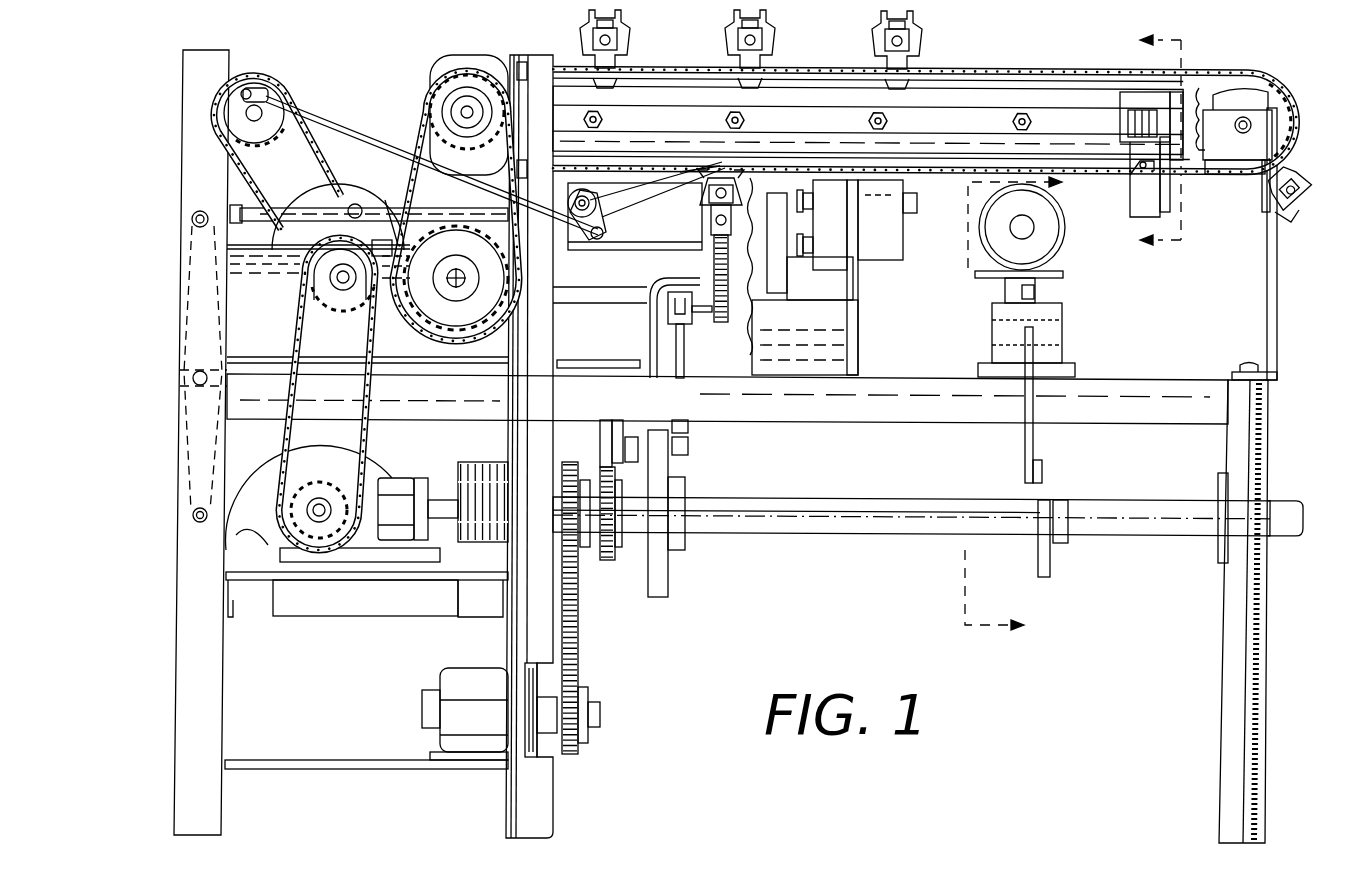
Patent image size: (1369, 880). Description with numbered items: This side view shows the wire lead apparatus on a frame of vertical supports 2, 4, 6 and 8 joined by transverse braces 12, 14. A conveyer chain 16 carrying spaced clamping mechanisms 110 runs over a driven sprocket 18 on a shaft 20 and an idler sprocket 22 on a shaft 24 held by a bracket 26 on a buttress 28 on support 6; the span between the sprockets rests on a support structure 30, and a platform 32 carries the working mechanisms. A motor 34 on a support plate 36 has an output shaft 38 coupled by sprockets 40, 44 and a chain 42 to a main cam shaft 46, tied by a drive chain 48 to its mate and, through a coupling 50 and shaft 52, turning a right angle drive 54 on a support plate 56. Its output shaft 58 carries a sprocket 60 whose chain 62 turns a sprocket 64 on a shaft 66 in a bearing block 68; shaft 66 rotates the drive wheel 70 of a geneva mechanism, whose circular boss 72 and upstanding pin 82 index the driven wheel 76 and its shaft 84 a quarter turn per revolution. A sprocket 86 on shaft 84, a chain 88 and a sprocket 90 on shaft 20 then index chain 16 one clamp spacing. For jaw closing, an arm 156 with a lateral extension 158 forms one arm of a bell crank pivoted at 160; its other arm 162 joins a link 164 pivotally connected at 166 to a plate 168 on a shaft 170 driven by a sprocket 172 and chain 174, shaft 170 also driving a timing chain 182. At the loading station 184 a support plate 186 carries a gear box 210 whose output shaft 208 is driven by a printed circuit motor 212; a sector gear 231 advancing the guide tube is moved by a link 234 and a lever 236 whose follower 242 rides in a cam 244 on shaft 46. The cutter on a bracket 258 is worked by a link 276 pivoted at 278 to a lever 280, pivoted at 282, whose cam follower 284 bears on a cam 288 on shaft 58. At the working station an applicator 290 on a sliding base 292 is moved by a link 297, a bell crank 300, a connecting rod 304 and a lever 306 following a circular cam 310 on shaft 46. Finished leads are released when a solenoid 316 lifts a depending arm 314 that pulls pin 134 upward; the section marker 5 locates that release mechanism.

The vertical support 2 is at (190, 720).
The vertical support 4 is at (522, 800).
The section line 5- 5 is at (1152, 140).
The vertical support 6 is at (1258, 765).
The vertical support 8 is at (1023, 404).
The transverse brace 12 is at (253, 606).
The transverse brace 14 is at (478, 600).
The conveyer chain 16 is at (1018, 66).
The driven sprocket 18 is at (490, 58).
The shaft 20 is at (465, 110).
The idler sprocket 22 is at (1266, 103).
The shaft 24 is at (1253, 125).
The bracket 26 is at (1262, 170).
The buttress 28 is at (1270, 328).
The support structure 30 is at (963, 131).
The platform 32 is at (935, 414).
The motor 34 is at (492, 696).
The support plate 36 is at (345, 766).
The output shaft 38 is at (600, 722).
The sprocket 40 is at (584, 740).
The chain 42 is at (578, 638).
The sprocket 44 is at (586, 480).
The shaft 46 is at (826, 522).
The drive chain 48 is at (610, 562).
The coupling 50 is at (484, 464).
The shaft 52 is at (440, 505).
The right angle drive mechanism 54 is at (388, 480).
The support plate 56 is at (395, 582).
The output shaft 58 is at (312, 525).
The sprocket 60 is at (335, 496).
The chain 62 is at (310, 352).
The sprocket 64 is at (356, 266).
The shaft 66 is at (312, 288).
The bearing block 68 is at (268, 280).
The drive wheel 70 is at (333, 227).
The circular boss 72 is at (359, 201).
The driven wheel 76 is at (400, 215).
The upstanding pin 82 is at (380, 248).
The shaft 84 is at (458, 278).
The sprocket 86 is at (468, 325).
The chain 88 is at (440, 338).
The sprocket 90 is at (430, 120).
The clamping mechanism 110 is at (628, 52).
The pin 134 is at (1296, 216).
The arm 156 is at (677, 172).
The lateral extension 158 is at (722, 165).
The pivot 160 is at (598, 205).
The arm 162 is at (600, 222).
The link 164 is at (375, 148).
The pivotal connection 166 is at (270, 88).
The plate 168 is at (235, 120).
The shaft 170 is at (235, 137).
The sprocket 172 is at (292, 118).
The chain 174 is at (300, 196).
The chain 182 is at (400, 200).
The loading station 184 is at (908, 280).
The support plate 186 is at (848, 336).
The output shaft 208 is at (804, 200).
The gear box 210 is at (835, 255).
The printed circuit motor 212 is at (880, 225).
The sector gear 231 is at (732, 258).
The link 234 is at (686, 362).
The lever 236 is at (690, 450).
The follower 242 is at (690, 428).
The cam 244 is at (662, 472).
The bracket 258 is at (672, 281).
The link 276 is at (445, 226).
The pivotal connection 278 is at (192, 223).
The lever 280 is at (184, 272).
The pivot 282 is at (192, 378).
The cam follower 284 is at (194, 522).
The cam 288 is at (238, 522).
The applicator 290 is at (1060, 248).
The base 292 is at (1064, 275).
The link 297 is at (1048, 293).
The bell crank 300 is at (1050, 322).
The connecting rod 304 is at (1036, 446).
The lever 306 is at (1044, 470).
The circular cam 310 is at (1050, 558).
The depending arm 314 is at (1132, 198).
The solenoid 316 is at (1126, 121).